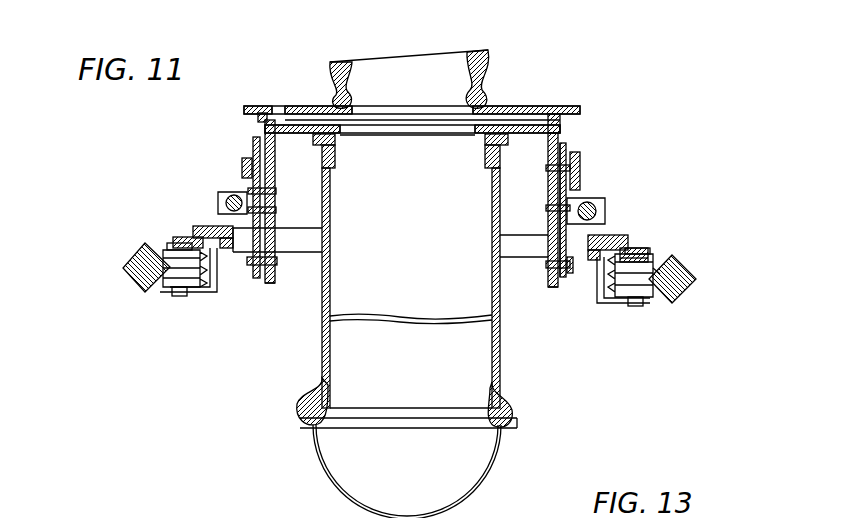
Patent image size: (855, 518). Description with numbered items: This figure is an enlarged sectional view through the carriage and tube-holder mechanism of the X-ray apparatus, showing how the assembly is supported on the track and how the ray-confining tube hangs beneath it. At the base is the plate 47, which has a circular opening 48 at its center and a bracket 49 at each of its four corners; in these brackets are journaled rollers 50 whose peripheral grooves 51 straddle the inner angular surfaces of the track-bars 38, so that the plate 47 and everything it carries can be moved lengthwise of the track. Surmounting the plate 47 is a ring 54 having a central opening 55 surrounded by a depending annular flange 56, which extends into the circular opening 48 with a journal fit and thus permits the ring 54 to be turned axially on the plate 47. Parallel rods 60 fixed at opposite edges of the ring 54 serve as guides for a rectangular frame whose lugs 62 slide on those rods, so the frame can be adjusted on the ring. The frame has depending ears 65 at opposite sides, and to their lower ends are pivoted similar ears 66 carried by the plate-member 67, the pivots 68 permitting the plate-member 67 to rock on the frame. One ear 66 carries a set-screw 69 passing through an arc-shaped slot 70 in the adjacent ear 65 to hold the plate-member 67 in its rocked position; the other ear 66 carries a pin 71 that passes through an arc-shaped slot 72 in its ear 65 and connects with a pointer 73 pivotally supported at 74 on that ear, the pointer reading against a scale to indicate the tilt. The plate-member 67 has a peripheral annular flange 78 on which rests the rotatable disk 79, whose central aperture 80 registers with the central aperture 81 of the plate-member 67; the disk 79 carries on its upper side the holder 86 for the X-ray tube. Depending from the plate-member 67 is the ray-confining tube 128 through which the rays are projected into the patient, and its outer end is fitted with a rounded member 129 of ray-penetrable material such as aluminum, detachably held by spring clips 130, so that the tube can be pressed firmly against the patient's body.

The track-bars 38 is at (127, 264).
The plate 47 is at (637, 250).
The circular opening 48 is at (617, 240).
The bracket 49 is at (213, 294).
The rollers 50 is at (172, 278).
The peripheral grooves 51 is at (655, 272).
The ring 54 is at (602, 236).
The central opening 55 is at (530, 240).
The depending annular flange 56 is at (592, 258).
The parallel rods 60 is at (262, 210).
The lugs 62 is at (222, 202).
The depending ears 65 is at (265, 281).
The ears 66 is at (273, 278).
The plate-member 67 is at (262, 128).
The pivots 68 is at (251, 264).
The set-screw 69 is at (583, 166).
The arc-shaped slot 70 is at (574, 156).
The pin 71 is at (262, 191).
The arc-shaped slot 72 is at (258, 178).
The pointer 73 is at (242, 180).
The pivot 74 is at (242, 218).
The annular flange 78 is at (563, 113).
The disk 79 is at (520, 108).
The central aperture 80 is at (443, 113).
The central aperture 81 is at (457, 134).
The holder 86 is at (352, 63).
The ray-confining tube 128 is at (500, 368).
The member 129 is at (498, 457).
The spring clips 130 is at (298, 403).